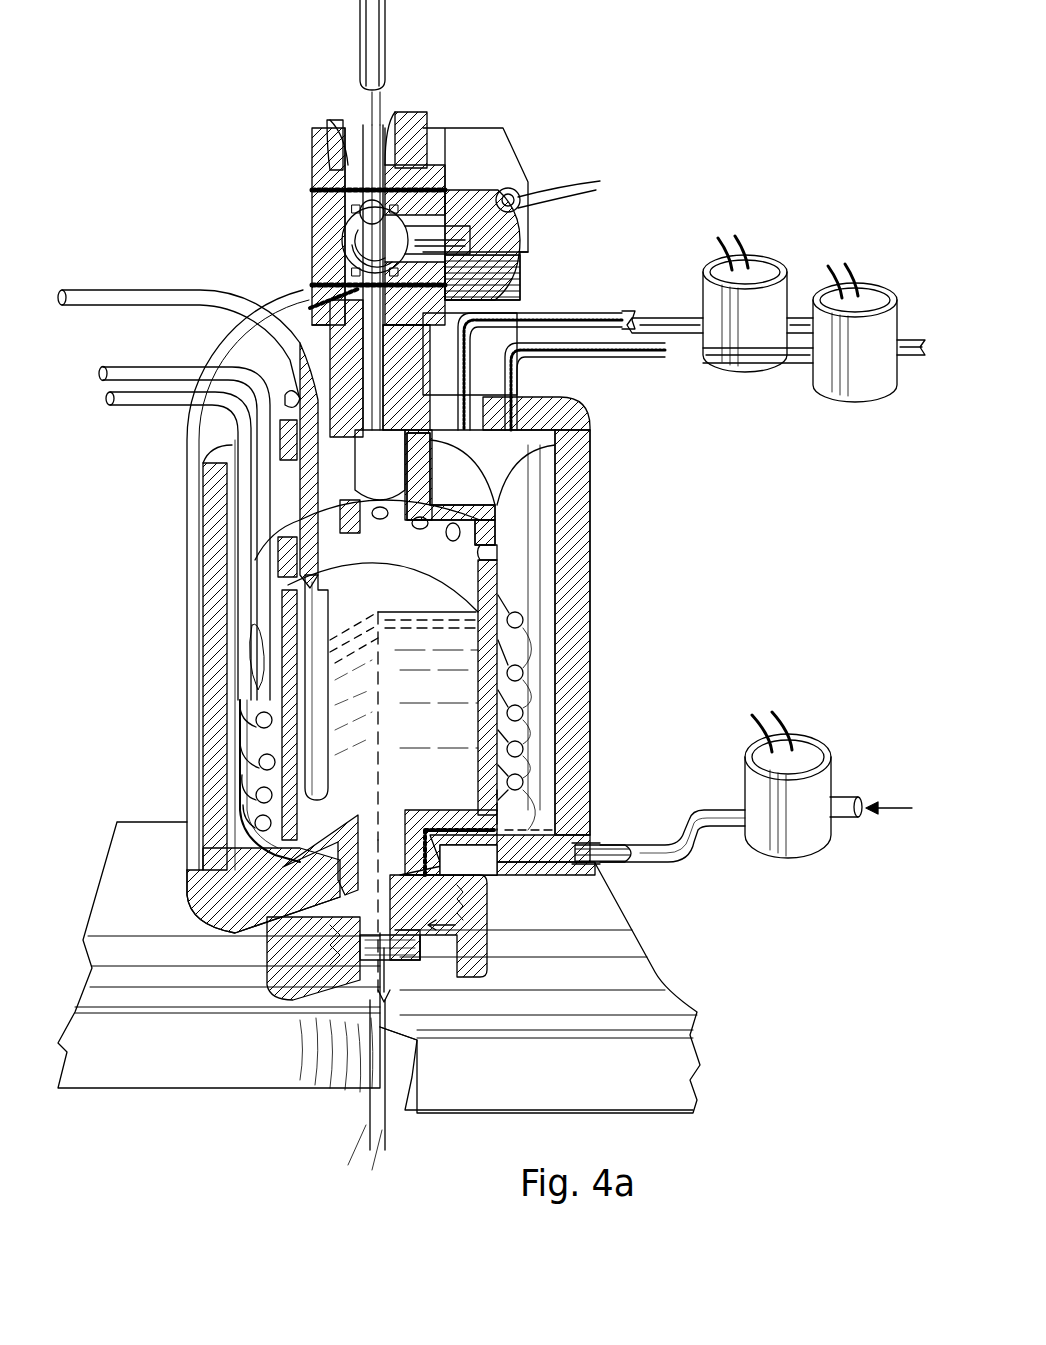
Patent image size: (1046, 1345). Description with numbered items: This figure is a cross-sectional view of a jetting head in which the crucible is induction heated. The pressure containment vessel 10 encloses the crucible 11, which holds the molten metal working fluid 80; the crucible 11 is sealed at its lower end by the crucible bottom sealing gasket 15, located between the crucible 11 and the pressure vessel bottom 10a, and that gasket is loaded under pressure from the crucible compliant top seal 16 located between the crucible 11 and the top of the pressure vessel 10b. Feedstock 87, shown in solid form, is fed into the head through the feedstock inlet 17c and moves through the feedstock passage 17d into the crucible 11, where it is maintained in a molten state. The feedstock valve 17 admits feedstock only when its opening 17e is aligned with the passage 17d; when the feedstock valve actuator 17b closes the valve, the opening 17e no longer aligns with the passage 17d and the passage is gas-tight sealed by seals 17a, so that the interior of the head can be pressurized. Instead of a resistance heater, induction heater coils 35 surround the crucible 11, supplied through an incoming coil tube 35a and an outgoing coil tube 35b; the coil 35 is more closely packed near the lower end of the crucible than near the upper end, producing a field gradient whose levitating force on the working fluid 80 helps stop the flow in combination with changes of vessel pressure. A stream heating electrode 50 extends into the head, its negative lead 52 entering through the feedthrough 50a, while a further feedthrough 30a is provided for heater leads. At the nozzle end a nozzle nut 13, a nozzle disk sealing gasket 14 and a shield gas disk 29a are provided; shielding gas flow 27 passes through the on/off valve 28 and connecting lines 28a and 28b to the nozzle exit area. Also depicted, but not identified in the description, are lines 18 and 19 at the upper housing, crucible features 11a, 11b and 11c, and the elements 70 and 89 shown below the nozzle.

The feedstock 87 is at (388, 21).
The feedstock inlet 17c is at (422, 112).
The feedstock valve 17 is at (371, 198).
The opening 17e is at (425, 188).
The feedstock valve actuator 17b is at (512, 172).
The seals 17a is at (448, 258).
The feedstock passage 17d is at (368, 308).
The hose 19 is at (593, 313).
The hose 18 is at (643, 360).
The pressure containment vessel 10 is at (592, 636).
The top of the pressure vessel 10b is at (532, 450).
The crucible compliant top seal 16 is at (440, 434).
The notch 11c is at (488, 552).
The feedthrough 30a is at (232, 425).
The negative lead 52 is at (140, 290).
The feedthrough 50a is at (293, 398).
The outgoing coil tube 35b is at (137, 367).
The incoming coil tube 35a is at (137, 407).
The induction heater coils 35 is at (535, 695).
The crucible 11 is at (478, 691).
The cup top 11a is at (476, 630).
The molten metal working fluid 80 is at (450, 744).
The cup coil 11b is at (492, 733).
The stream heating electrode 50 is at (330, 620).
The nozzle disk sealing gasket 14 is at (377, 890).
The pressure vessel bottom 10a is at (521, 833).
The connecting line 28a is at (242, 870).
The shielding gas flow 27 is at (463, 966).
The nozzle nut 13 is at (488, 914).
The shield gas disk 29a is at (422, 942).
The crucible bottom sealing gasket 15 is at (473, 838).
The connecting line 28b is at (708, 808).
The on/off valve 28 is at (808, 742).
The base 70 is at (177, 1068).
The lower rod 89 is at (387, 950).